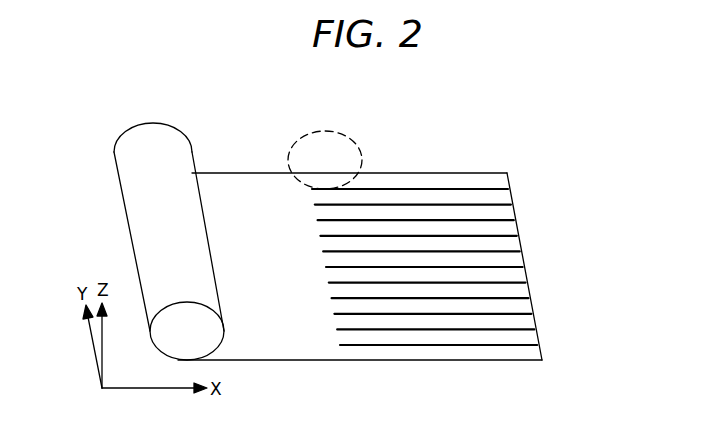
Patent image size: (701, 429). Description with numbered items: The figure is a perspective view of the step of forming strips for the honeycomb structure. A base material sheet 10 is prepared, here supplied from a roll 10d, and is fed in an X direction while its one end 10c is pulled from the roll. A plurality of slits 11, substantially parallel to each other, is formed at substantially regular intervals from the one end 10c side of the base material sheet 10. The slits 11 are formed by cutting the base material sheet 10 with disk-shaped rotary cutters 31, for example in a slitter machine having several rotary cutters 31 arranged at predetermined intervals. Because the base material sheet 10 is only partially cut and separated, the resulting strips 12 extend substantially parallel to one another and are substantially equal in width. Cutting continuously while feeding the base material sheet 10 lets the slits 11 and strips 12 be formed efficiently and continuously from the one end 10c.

The base material sheet 10 is at (238, 188).
The one end of the base material sheet 10c is at (522, 243).
The roll 10d is at (130, 141).
The slits 11 is at (393, 188).
The strips 12 is at (500, 178).
The rotary cutters 31 is at (363, 150).